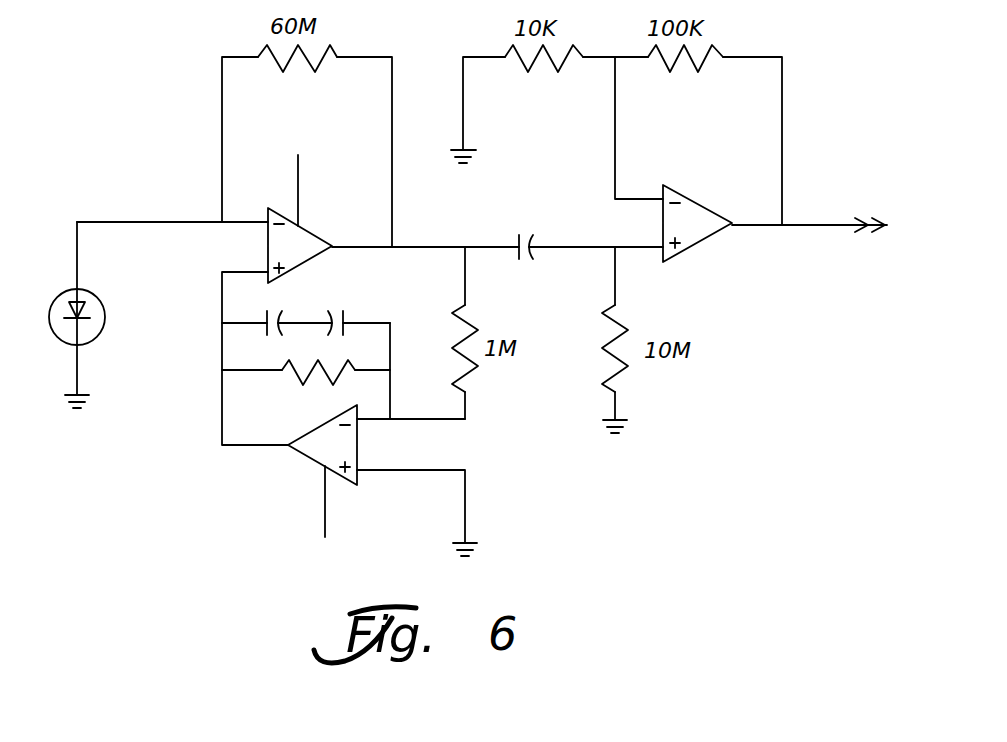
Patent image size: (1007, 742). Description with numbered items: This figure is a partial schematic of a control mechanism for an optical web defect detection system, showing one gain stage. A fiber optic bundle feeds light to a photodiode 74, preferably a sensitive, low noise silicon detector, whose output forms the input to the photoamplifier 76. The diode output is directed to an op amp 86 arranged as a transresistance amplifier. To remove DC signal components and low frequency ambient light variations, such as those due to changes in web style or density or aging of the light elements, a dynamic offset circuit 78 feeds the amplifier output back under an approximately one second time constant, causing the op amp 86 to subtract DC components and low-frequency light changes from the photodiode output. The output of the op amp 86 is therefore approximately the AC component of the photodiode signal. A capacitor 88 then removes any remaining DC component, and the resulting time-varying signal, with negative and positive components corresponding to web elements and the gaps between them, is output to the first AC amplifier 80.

The photodiode 74 is at (106, 317).
The photoamplifier 76 is at (200, 163).
The dynamic offset circuit 78 is at (488, 407).
The first AC amplifier 80 is at (722, 246).
The op amp 86 is at (312, 232).
The capacitor 88 is at (517, 238).